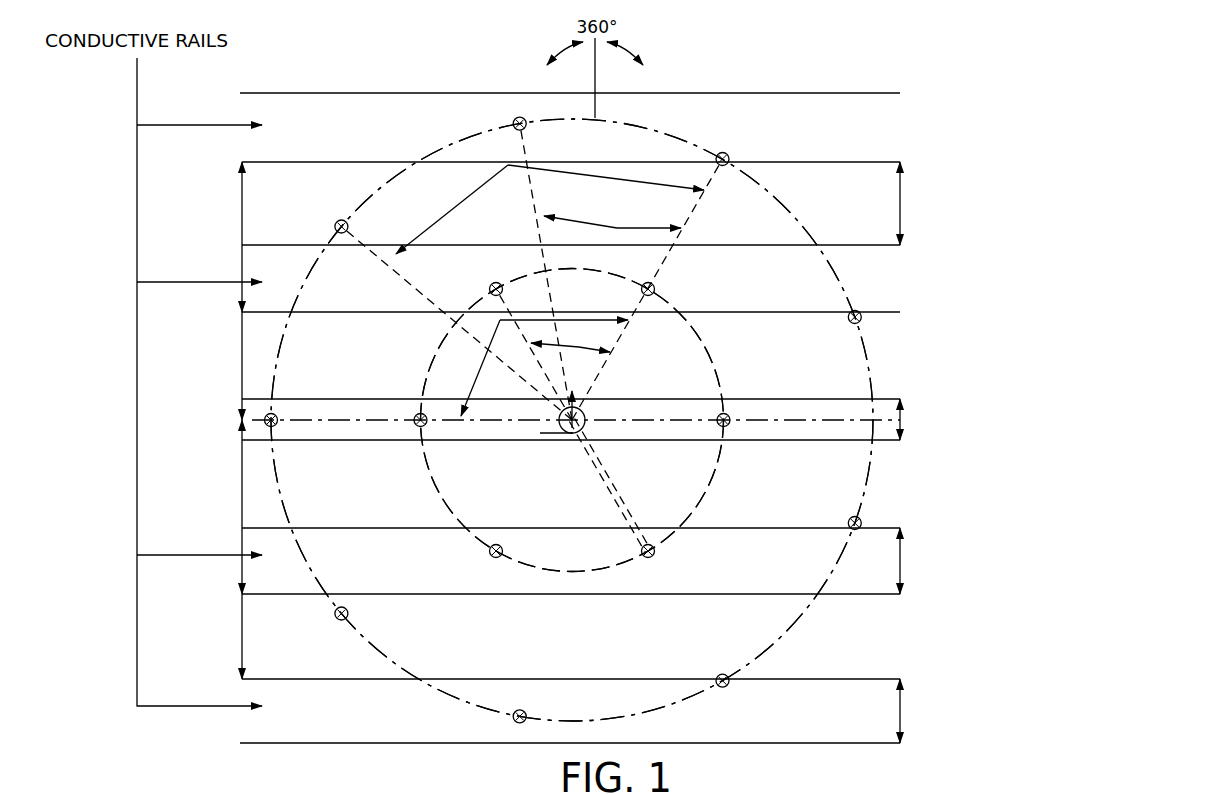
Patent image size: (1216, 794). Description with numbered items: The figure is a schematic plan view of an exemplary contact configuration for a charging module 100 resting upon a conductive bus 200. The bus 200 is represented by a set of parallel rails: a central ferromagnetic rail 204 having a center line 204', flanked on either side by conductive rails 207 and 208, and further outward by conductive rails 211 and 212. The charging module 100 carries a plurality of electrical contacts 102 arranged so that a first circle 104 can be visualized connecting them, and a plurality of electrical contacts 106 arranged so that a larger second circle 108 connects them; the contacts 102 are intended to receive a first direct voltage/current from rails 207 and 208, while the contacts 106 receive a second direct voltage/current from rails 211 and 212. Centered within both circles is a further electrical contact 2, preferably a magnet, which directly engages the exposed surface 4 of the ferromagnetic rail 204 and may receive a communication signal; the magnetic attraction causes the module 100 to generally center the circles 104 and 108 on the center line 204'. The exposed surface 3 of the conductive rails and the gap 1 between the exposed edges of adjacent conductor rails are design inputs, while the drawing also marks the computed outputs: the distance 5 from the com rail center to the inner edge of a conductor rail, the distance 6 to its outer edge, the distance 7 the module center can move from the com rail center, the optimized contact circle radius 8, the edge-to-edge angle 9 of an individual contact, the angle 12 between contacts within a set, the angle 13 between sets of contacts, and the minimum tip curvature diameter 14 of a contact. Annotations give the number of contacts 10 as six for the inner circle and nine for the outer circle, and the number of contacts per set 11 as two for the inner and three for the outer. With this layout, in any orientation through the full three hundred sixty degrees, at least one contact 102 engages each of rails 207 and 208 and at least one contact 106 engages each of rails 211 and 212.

The gap between exposed edges of conductor rails 1 is at (911, 203).
The electrical contact 2 is at (586, 420).
The surface of conductive rail 3 is at (900, 560).
The surface of ferromagnetic rail 4 is at (900, 422).
The distance from center of com rail to inner edge of conductor rail 5 is at (229, 366).
The distance from center of com rail to outer edge of conductor rail 6 is at (229, 507).
The distance the center of the charging module can move from center of the com rail 7 is at (557, 437).
The optimized electrical contact circle radius 8 is at (571, 719).
The angle of individual electrical contact from edge to edge 9 is at (636, 527).
The number of electrical contacts 10 is at (1057, 297).
The number of electrical contacts per set 11 is at (1056, 329).
The angle between contacts from center of sets 12 is at (579, 347).
The angle between sets of contacts from center to center 13 is at (500, 320).
The minimum electrical contact tip diameter of curvature 14 is at (864, 306).
The charging module 100 is at (774, 191).
The electrical contacts 102 is at (652, 552).
The first circle 104 is at (720, 462).
The electrical contacts 106 is at (728, 684).
The second circle 108 is at (680, 706).
The conductive bus 200 is at (226, 643).
The ferromagnetic rail 204 is at (688, 506).
The center line of the rail 204' is at (602, 399).
The conductive rail 207 is at (890, 270).
The conductive rail 208 is at (874, 556).
The conductive rail 211 is at (890, 120).
The conductive rail 212 is at (888, 727).